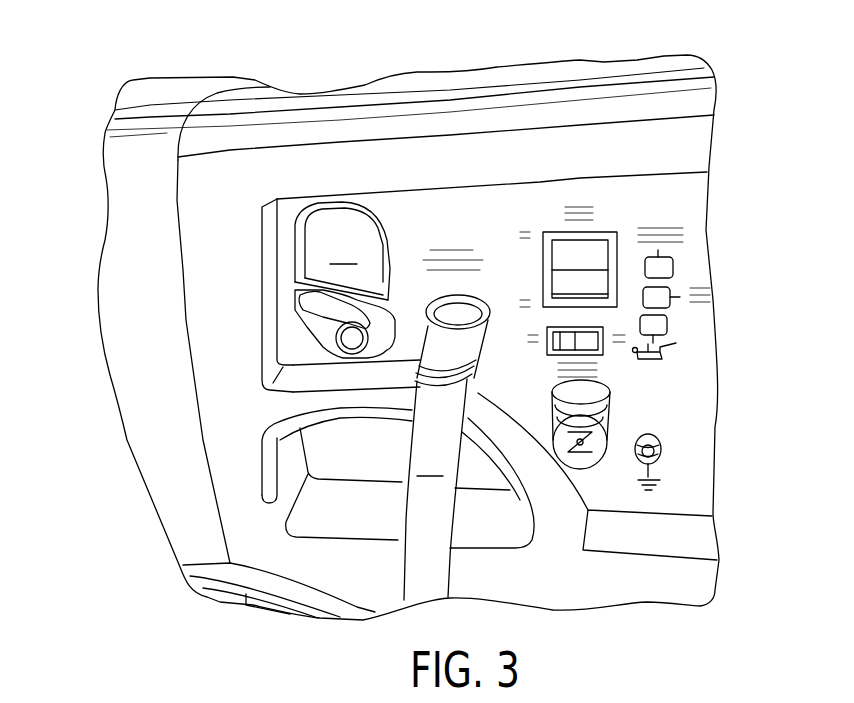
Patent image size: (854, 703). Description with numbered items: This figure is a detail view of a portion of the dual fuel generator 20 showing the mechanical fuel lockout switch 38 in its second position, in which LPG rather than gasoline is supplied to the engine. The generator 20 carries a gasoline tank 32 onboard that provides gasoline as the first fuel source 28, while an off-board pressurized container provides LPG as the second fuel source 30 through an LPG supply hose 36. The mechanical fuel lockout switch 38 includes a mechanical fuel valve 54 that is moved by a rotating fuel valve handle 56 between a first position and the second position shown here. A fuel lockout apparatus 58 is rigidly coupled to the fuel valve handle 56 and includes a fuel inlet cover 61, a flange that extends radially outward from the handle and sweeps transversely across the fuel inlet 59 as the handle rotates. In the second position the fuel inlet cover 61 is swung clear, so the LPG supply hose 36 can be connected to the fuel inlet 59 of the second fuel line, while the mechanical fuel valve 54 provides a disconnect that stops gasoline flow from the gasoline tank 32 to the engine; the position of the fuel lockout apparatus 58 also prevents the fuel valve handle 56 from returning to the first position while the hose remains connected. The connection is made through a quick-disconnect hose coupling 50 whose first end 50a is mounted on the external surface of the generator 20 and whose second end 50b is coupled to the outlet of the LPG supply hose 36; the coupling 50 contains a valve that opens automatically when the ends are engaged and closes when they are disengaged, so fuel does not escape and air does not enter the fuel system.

The dual fuel generator 20 is at (128, 63).
The first fuel source 28 is at (175, 72).
The gasoline tank 32 is at (691, 138).
The mechanical fuel lockout switch 38 is at (283, 182).
The mechanical fuel valve 54 is at (330, 373).
The fuel lockout apparatus 58 is at (342, 251).
The fuel inlet cover 61 is at (317, 225).
The fuel valve handle 56 is at (300, 310).
The quick-disconnect hose coupling 50 is at (463, 313).
The fuel inlet 59 is at (450, 310).
The first end 50a is at (470, 327).
The second end 50b is at (463, 358).
The second fuel source 30 is at (435, 489).
The LPG supply hose 36 is at (433, 557).